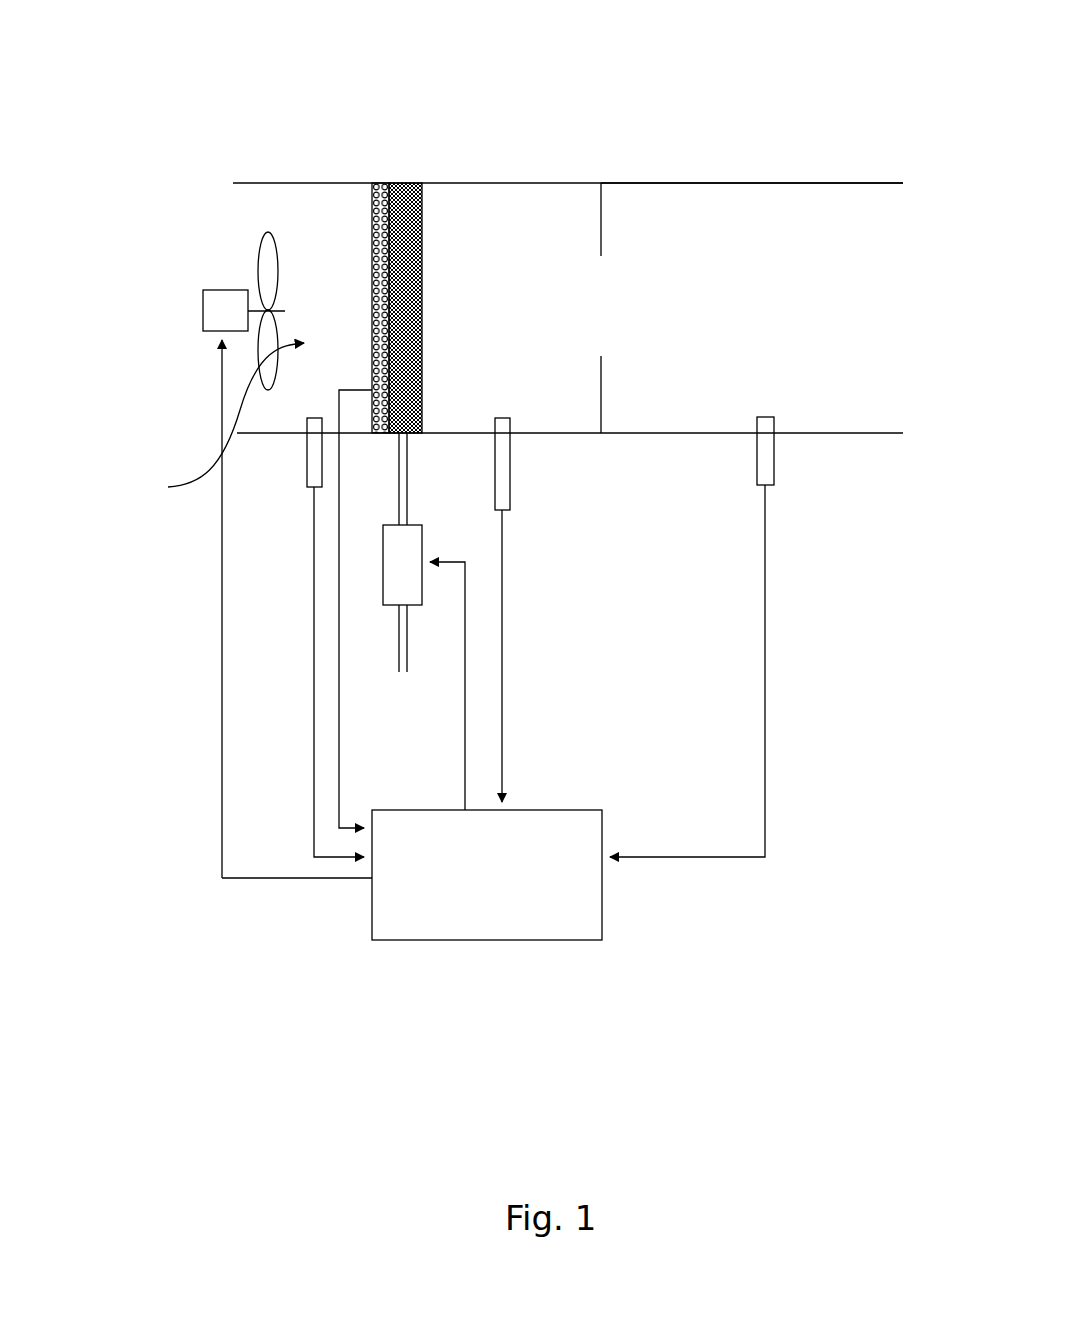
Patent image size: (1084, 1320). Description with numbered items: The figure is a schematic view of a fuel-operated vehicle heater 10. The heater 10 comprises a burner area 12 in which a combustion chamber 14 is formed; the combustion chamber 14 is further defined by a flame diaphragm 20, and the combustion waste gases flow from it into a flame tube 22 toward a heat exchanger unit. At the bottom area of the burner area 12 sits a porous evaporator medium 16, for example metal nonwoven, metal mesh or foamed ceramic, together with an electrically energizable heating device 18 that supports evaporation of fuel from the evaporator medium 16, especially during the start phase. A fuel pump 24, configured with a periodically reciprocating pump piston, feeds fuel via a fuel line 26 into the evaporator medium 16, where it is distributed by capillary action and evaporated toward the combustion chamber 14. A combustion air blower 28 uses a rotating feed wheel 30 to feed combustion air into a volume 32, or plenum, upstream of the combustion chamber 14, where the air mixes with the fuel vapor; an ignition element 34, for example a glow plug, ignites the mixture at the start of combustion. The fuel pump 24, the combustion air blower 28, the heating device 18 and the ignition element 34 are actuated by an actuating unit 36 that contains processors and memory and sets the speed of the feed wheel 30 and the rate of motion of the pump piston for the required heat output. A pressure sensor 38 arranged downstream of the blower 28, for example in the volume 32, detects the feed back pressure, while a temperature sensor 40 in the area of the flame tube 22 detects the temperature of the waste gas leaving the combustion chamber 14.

The fuel-operated vehicle heater 10 is at (778, 124).
The burner area 12 is at (548, 183).
The combustion chamber 14 is at (574, 382).
The porous evaporator medium 16 is at (422, 218).
The heating device 18 is at (380, 183).
The flame diaphragm 20 is at (601, 224).
The flame tube 22 is at (803, 183).
The fuel pump 24 is at (384, 578).
The fuel line 26 is at (399, 638).
The combustion air blower 28 is at (203, 313).
The feed wheel 30 is at (280, 252).
The volume 32 is at (209, 424).
The ignition element 34 is at (510, 467).
The actuating unit 36 is at (517, 940).
The pressure sensor 38 is at (307, 460).
The temperature sensor 40 is at (774, 460).